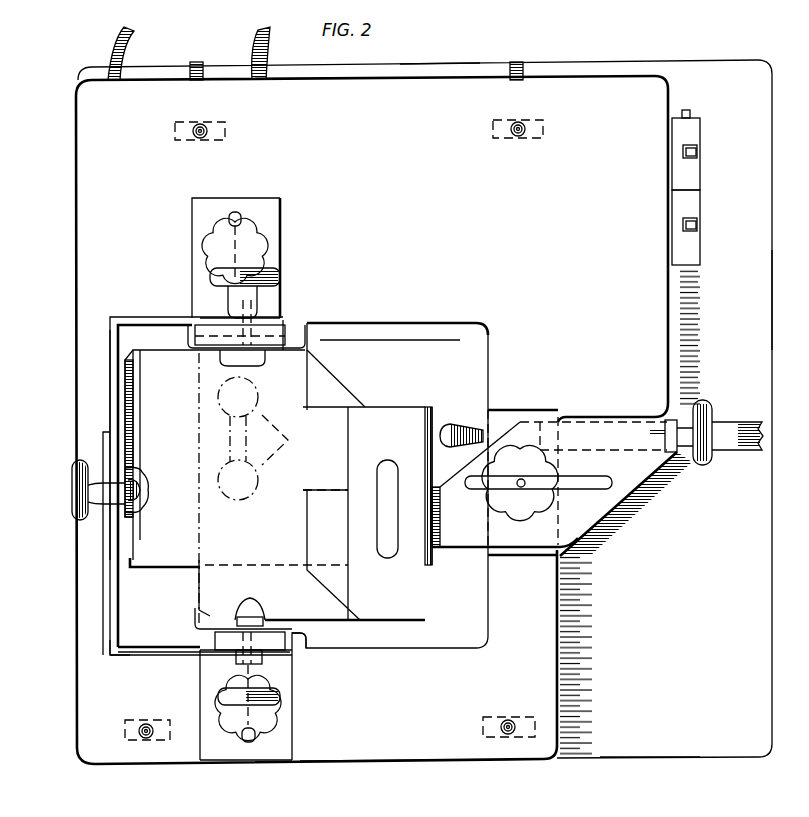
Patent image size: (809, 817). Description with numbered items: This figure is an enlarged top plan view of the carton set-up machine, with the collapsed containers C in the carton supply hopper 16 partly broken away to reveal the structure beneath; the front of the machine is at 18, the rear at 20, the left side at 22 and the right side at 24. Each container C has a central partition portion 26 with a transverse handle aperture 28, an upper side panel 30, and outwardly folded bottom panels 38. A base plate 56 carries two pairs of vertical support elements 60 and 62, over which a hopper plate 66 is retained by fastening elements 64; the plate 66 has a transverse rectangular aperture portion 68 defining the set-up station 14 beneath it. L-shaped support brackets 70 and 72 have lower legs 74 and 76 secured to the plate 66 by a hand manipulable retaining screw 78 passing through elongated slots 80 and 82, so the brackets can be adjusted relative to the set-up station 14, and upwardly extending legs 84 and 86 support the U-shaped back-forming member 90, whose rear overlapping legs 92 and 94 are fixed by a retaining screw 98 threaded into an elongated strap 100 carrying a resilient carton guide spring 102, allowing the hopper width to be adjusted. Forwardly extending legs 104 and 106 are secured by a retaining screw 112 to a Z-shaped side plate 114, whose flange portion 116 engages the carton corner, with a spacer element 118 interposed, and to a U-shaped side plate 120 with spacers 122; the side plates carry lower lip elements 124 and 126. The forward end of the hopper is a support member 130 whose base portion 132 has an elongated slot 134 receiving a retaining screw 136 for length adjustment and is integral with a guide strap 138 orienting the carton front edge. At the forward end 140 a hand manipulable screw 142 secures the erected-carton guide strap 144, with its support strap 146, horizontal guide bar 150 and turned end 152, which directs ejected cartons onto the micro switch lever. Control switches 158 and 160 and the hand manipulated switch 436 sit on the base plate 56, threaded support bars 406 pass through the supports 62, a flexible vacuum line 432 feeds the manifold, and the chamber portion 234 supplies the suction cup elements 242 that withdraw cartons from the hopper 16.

The set-up station 14 is at (417, 343).
The carton supply hopper 16 is at (122, 657).
The front of the machine 18 is at (771, 298).
The rear of the machine 20 is at (76, 274).
The left side of the machine 22 is at (384, 761).
The right side of the machine 24 is at (436, 63).
The central partition portion 26 is at (345, 513).
The transverse handle aperture 28 is at (388, 462).
The upper side panel 30 is at (273, 489).
The bottom panels 38 is at (215, 458).
The base plate 56 is at (657, 748).
The support elements 60 is at (130, 740).
The support elements 62 is at (225, 136).
The fastening elements 64 is at (206, 126).
The hopper plate 66 is at (617, 78).
The transverse rectangular aperture portion 68 is at (488, 344).
The L-shaped support bracket 70 is at (294, 712).
The L-shaped support bracket 72 is at (282, 220).
The lower outwardly extending leg 74 is at (262, 745).
The lower outwardly extending leg 76 is at (268, 210).
The hand manipulable retaining screw 78 is at (262, 215).
The elongated slot 80 is at (255, 742).
The elongated slot 82 is at (236, 212).
The upwardly extending leg 84 is at (215, 648).
The upwardly extending leg 86 is at (262, 336).
The back-forming member 90 is at (108, 520).
The rear overlapping leg 92 is at (110, 358).
The rear overlapping leg 94 is at (116, 574).
The hand manipulable retaining screw 98 is at (72, 478).
The elongated strap 100 is at (138, 470).
The resilient carton guide spring 102 is at (144, 486).
The forwardly extending leg 104 is at (132, 317).
The forwardly extending leg 106 is at (158, 656).
The hand manipulable retaining screw 112 is at (278, 264).
The Z-shaped side plate 114 is at (308, 637).
The inwardly extending flange portion 116 is at (194, 620).
The spacer element 118 is at (272, 638).
The U-shaped side plate 120 is at (290, 352).
The spacers 122 is at (255, 330).
The lip element 124 is at (250, 616).
The lip element 126 is at (222, 360).
The support member 130 is at (478, 555).
The base portion 132 is at (592, 528).
The elongated slot 134 is at (565, 470).
The hand manipulable retaining screw 136 is at (528, 448).
The guide strap 138 is at (440, 552).
The forward end of the base 140 is at (684, 448).
The hand manipulable screw 142 is at (708, 402).
The erected-carton guide strap 144 is at (604, 420).
The support strap 146 is at (673, 420).
The guide bar 150 is at (738, 424).
The upwardly turned, rearwardly extending end 152 is at (458, 424).
The control switch 158 is at (690, 138).
The control switch 160 is at (690, 212).
The chamber portion 234 is at (238, 438).
The suction cup elements 242 is at (295, 440).
The threaded support bars 406 is at (196, 62).
The flexible vacuum line 432 is at (260, 38).
The hand manipulated switch 436 is at (688, 110).
The containers C is at (332, 366).